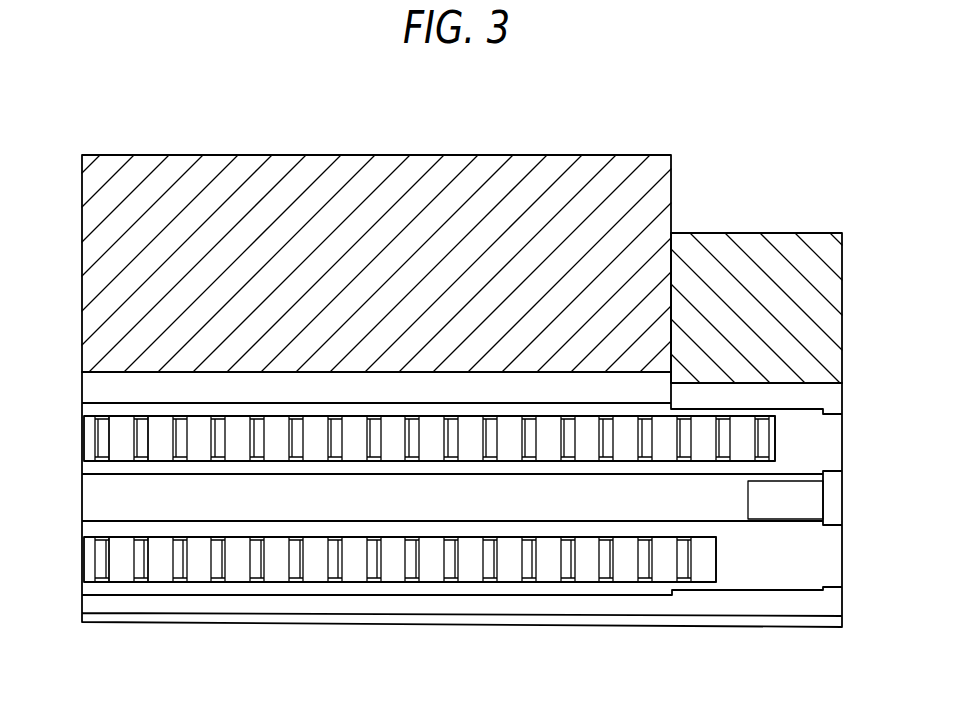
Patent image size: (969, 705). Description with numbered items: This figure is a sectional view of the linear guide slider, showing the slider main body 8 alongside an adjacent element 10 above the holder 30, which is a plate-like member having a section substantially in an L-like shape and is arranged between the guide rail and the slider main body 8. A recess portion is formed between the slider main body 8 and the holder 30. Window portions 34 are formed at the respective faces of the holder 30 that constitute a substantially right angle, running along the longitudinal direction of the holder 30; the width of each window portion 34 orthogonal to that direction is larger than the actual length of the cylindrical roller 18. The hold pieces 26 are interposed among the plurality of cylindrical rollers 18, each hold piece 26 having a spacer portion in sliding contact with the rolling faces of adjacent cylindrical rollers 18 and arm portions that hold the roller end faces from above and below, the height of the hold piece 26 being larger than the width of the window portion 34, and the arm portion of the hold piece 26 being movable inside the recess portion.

The slider main body 8 is at (423, 163).
The magnetic core block 10 is at (747, 243).
The cylindrical roller 18 is at (163, 452).
The hold piece 26 is at (183, 452).
The holder 30 is at (834, 558).
The window portion 34 is at (783, 436).